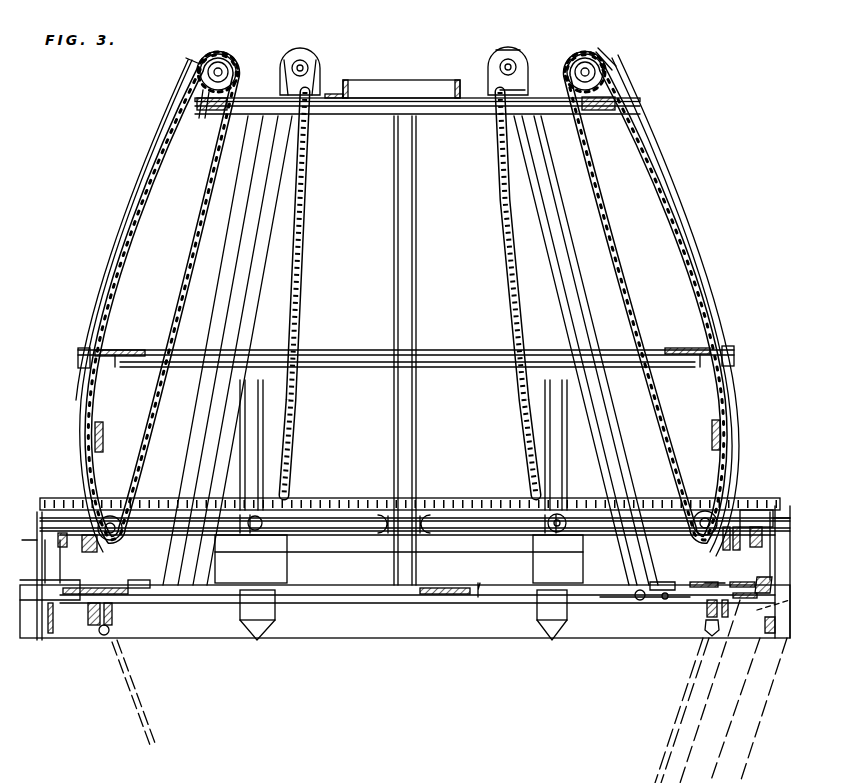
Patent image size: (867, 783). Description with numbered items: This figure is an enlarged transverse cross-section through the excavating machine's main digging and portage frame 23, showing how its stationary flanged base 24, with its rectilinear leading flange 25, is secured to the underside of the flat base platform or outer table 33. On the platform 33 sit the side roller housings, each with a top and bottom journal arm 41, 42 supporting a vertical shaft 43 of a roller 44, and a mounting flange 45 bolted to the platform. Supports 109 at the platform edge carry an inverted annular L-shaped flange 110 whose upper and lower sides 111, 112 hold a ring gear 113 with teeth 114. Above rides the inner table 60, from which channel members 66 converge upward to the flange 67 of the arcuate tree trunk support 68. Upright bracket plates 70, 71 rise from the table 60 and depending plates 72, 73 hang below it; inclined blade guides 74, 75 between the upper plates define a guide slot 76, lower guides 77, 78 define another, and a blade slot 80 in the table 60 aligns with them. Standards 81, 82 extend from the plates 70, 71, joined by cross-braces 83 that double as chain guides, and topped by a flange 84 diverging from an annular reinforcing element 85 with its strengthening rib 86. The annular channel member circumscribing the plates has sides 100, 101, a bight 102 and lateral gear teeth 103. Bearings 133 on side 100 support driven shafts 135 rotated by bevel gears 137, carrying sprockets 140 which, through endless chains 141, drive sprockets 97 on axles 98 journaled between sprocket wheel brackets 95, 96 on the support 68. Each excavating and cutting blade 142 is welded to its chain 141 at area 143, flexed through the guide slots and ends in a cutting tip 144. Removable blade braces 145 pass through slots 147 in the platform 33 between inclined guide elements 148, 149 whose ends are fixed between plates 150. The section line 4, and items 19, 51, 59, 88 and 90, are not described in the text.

The section line 4- 4 is at (25, 600).
The frame member 19 is at (695, 620).
The main digging and portage frame 23 is at (445, 490).
The stationary flanged base 24 is at (782, 645).
The leading flange 25 is at (362, 645).
The base platform 33 is at (52, 642).
The top journal arm 41 is at (662, 580).
The bottom journal arm 42 is at (655, 603).
The vertical shaft 43 is at (668, 580).
The roller 44 is at (648, 603).
The mounting flange 45 is at (672, 600).
The bar 51 is at (628, 605).
The pivot 59 is at (478, 603).
The inner table 60 is at (140, 592).
The channel members 66 is at (418, 176).
The flange 67 is at (455, 112).
The arcuate tree trunk support 68 is at (195, 120).
The upright bracket plate 70 is at (220, 590).
The upright bracket plate 71 is at (110, 562).
The depending bracket plate 72 is at (245, 625).
The depending bracket plate 73 is at (98, 630).
The excavating blade guide 74 is at (90, 603).
The excavating blade guide 75 is at (100, 600).
The blade guide slot 76 is at (718, 600).
The blade guide 77 is at (122, 655).
The blade guide 78 is at (112, 630).
The blade slot 80 is at (75, 640).
The standard 81 is at (275, 432).
The standard 82 is at (98, 402).
The cross-braces 83 is at (99, 430).
The flange 84 is at (80, 355).
The annular reinforcing element 85 is at (455, 348).
The annular strengthening rib 86 is at (462, 366).
The mounting strip 88 is at (335, 92).
The top box 90 is at (462, 78).
The sprocket wheel bracket 95 is at (315, 58).
The sprocket wheel bracket 96 is at (528, 68).
The sprockets 97 is at (238, 60).
The axles 98 is at (220, 52).
The side 100 is at (47, 520).
The side 101 is at (44, 552).
The bight 102 is at (68, 520).
The gear teeth 103 is at (30, 545).
The supports 109 is at (22, 540).
The inverted annular L-shaped flange 110 is at (786, 506).
The upper side 111 is at (783, 506).
The lower side 112 is at (772, 512).
The ring gear 113 is at (340, 498).
The teeth 114 is at (325, 500).
The bearings 133 is at (434, 532).
The driven shafts 135 is at (165, 498).
The bevel gears 137 is at (420, 500).
The sprockets 140 is at (140, 520).
The endless chains 141 is at (118, 247).
The excavating and cutting blade 142 is at (692, 179).
The area 143 is at (195, 70).
The cutting tip 144 is at (562, 640).
The removable blade braces 145 is at (700, 752).
The slots 147 is at (700, 660).
The guide element 148 is at (768, 573).
The guide element 149 is at (778, 650).
The plates 150 is at (74, 610).